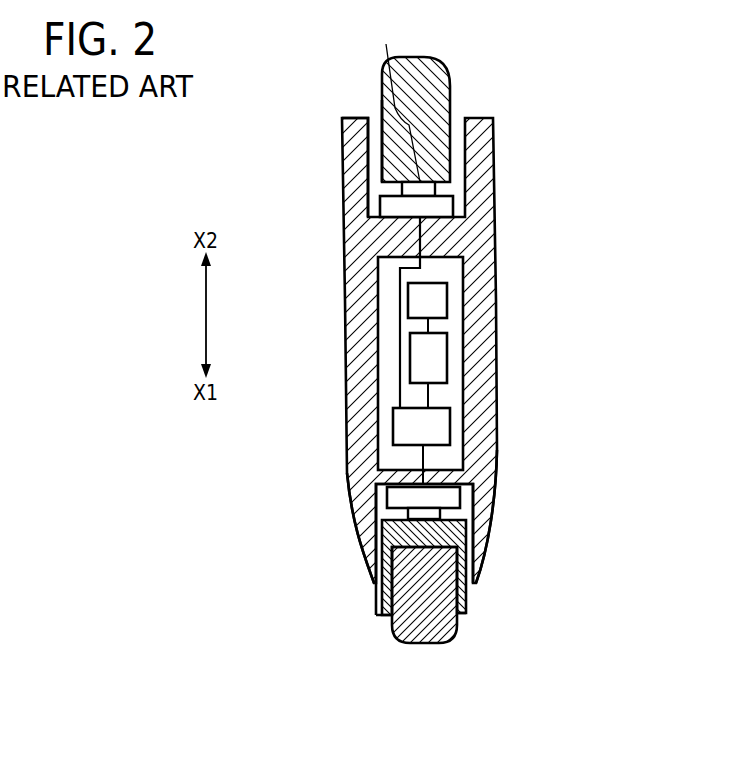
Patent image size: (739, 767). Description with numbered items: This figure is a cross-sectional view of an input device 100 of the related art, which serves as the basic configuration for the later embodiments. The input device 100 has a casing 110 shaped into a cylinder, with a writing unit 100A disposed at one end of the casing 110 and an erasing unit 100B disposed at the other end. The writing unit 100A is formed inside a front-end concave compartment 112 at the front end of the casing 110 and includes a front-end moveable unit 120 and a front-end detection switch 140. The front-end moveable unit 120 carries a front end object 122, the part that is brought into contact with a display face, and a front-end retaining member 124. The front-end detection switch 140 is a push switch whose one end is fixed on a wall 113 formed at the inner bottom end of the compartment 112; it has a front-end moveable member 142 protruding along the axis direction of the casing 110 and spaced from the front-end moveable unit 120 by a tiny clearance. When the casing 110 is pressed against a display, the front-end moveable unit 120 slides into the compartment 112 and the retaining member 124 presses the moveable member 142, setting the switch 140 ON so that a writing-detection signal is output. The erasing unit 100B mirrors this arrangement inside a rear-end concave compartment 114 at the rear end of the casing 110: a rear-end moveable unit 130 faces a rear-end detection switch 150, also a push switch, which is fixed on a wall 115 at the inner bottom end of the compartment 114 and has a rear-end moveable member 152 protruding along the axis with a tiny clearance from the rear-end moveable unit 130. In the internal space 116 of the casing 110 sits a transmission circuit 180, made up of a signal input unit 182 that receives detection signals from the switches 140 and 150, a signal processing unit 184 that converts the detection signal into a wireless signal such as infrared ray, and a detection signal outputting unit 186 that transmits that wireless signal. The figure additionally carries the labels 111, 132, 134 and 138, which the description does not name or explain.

The input device 100 is at (497, 76).
The writing unit 100A is at (568, 492).
The erasing unit 100B is at (561, 87).
The casing 110 is at (336, 247).
The pen tip side opening portion 111 is at (487, 560).
The front-end concave compartment 112 is at (383, 566).
The wall 113 is at (468, 478).
The rear-end concave compartment 114 is at (378, 128).
The wall 115 is at (470, 237).
The internal space 116 is at (388, 362).
The front-end moveable unit 120 is at (480, 619).
The front end object 122 is at (428, 644).
The front-end retaining member 124 is at (395, 541).
The rear-end moveable unit 130 is at (449, 90).
The rear end cap 132 is at (424, 56).
The cap side wall 134 is at (388, 158).
The cap through hole 138 is at (396, 101).
The front-end detection switch 140 is at (445, 498).
The front-end moveable member 142 is at (405, 516).
The rear-end detection switch 150 is at (454, 204).
The rear-end moveable member 152 is at (402, 190).
The transmission circuit 180 is at (562, 295).
The signal input unit 182 is at (445, 425).
The signal processing unit 184 is at (444, 358).
The detection signal outputting unit 186 is at (442, 303).